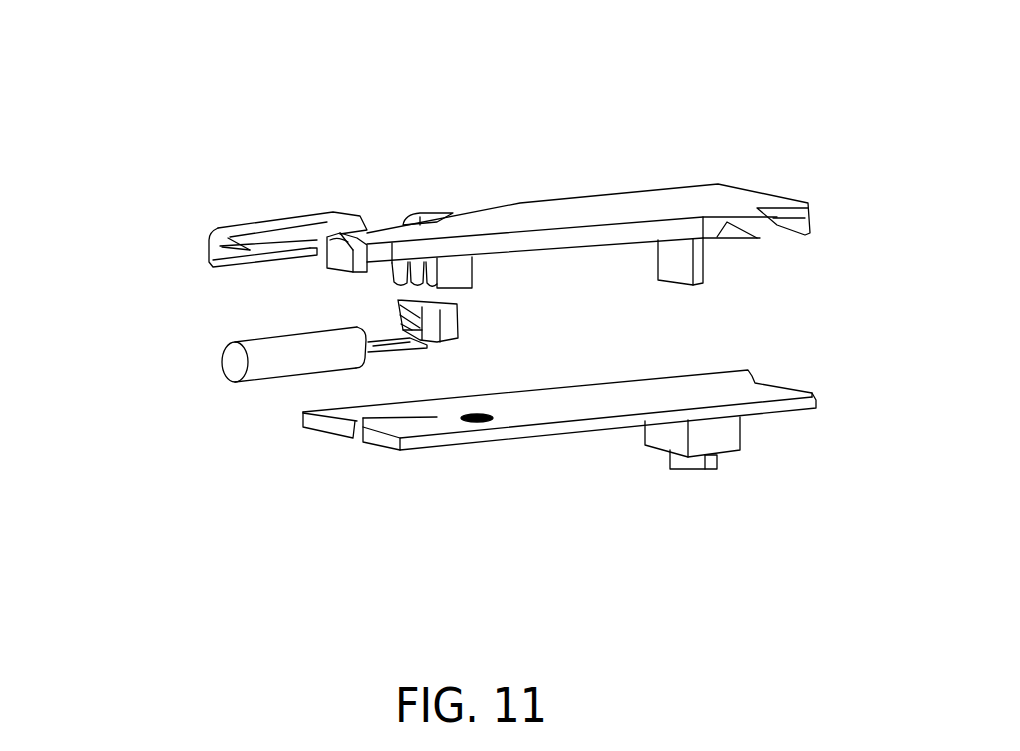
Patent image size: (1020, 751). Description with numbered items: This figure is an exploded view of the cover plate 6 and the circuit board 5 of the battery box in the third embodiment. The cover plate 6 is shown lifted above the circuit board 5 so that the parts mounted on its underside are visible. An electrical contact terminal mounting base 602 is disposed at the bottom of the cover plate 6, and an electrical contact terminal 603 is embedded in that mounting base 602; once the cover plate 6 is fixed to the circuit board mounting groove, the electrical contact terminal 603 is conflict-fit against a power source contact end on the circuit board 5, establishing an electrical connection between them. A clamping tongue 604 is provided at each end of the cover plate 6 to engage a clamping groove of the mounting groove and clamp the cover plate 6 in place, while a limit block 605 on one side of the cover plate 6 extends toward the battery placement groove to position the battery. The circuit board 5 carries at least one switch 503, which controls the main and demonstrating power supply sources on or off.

The cover plate 6 is at (557, 213).
The electrical contact terminal mounting base 602 is at (457, 270).
The electrical contact terminal 603 is at (438, 298).
The clamping tongue 604 is at (323, 247).
The limit block 605 is at (731, 219).
The circuit board 5 is at (573, 400).
The switch 503 is at (693, 467).